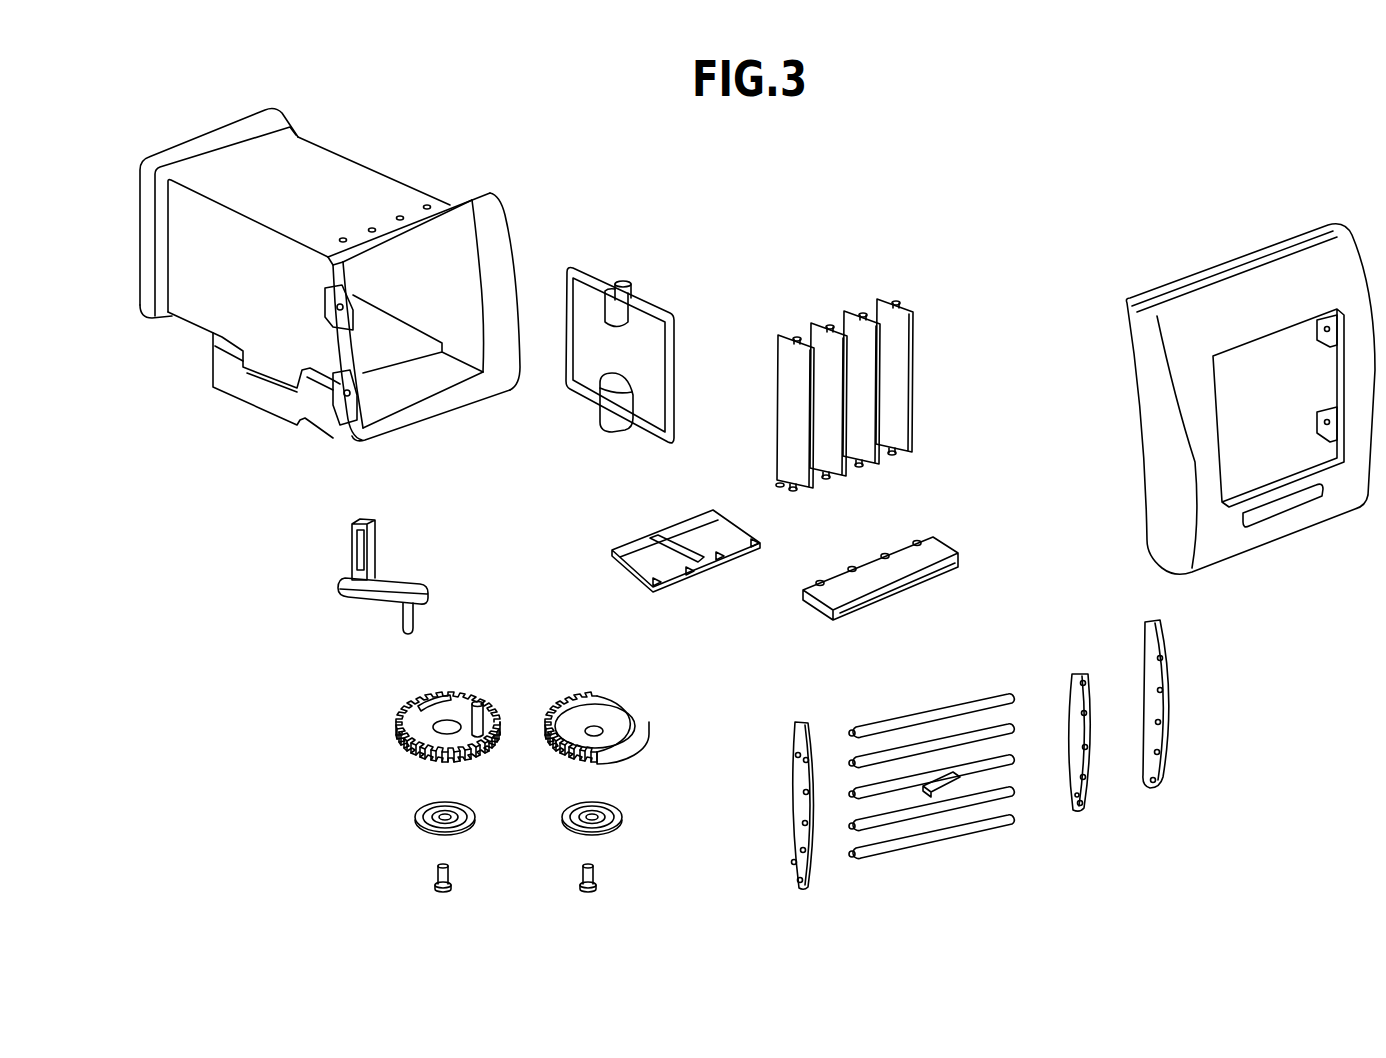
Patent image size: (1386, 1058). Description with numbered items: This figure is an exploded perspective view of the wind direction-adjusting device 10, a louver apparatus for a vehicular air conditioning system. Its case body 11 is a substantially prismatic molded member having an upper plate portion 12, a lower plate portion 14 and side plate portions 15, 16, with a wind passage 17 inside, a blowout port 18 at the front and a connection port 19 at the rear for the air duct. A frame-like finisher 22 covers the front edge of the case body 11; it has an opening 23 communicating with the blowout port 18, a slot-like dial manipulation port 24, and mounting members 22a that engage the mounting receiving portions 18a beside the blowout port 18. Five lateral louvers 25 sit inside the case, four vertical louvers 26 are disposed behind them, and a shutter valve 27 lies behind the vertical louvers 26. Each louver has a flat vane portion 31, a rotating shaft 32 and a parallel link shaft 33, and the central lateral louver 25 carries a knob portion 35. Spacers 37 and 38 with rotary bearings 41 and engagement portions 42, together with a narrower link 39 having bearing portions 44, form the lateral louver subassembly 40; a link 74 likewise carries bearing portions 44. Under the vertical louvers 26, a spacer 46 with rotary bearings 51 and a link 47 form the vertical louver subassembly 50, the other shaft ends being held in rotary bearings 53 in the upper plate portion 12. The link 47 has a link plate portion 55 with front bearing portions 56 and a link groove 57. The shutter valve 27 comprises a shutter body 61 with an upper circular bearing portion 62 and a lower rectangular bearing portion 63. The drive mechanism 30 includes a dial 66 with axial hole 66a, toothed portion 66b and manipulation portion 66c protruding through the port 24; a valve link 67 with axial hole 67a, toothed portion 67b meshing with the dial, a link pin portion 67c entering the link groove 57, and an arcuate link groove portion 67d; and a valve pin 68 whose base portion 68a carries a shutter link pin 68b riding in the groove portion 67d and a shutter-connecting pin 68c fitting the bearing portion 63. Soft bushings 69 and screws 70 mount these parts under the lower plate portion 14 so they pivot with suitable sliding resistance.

The wind direction-adjusting device 10 is at (977, 209).
The case body 11 is at (303, 138).
The upper plate portion 12 is at (343, 172).
The lower plate portion 14 is at (418, 343).
The side plate portion 15 is at (195, 313).
The side plate portion 16 is at (416, 252).
The wind passage 17 is at (460, 233).
The blowout port 18 is at (502, 318).
The mounting receiving portion 18a is at (347, 317).
The connection port 19 is at (145, 243).
The finisher 22 is at (1140, 330).
The mounting member 22a is at (1320, 332).
The opening 23 is at (1220, 440).
The dial manipulation port 24 is at (1290, 515).
The lateral louver 25 is at (983, 723).
The vertical louver 26 is at (867, 335).
The shutter valve 27 is at (653, 298).
The drive mechanism 30 is at (366, 799).
The vane portion 31 is at (830, 372).
The rotating shaft 32 is at (797, 337).
The link shaft 33 is at (778, 483).
The knob portion 35 is at (945, 790).
The spacer 37 is at (795, 725).
The spacer 38 is at (1145, 620).
The link 39 is at (1076, 674).
The lateral louver subassembly 40 is at (1159, 816).
The rotary bearing 41 is at (804, 760).
The engagement portion 42 is at (797, 753).
The bearing portion 44 is at (1090, 683).
The spacer 46 is at (958, 553).
The link 47 is at (632, 545).
The vertical louver subassembly 50 is at (970, 464).
The rotary bearing 51 is at (820, 580).
The rotary bearing 53 is at (400, 218).
The link plate portion 55 is at (700, 515).
The bearing portion 56 is at (660, 585).
The link groove 57 is at (660, 538).
The shutter body 61 is at (650, 345).
The bearing portion 62 is at (625, 280).
The bearing portion 63 is at (608, 432).
The dial 66 is at (621, 696).
The axial hole 66a is at (594, 728).
The toothed portion 66b is at (556, 703).
The manipulation portion 66c is at (645, 743).
The valve link 67 is at (405, 700).
The axial hole 67a is at (435, 725).
The toothed portion 67b is at (415, 755).
The link pin portion 67c is at (480, 703).
The link groove portion 67d is at (444, 695).
The valve pin 68 is at (393, 578).
The base portion 68a is at (418, 588).
The shutter link pin 68b is at (413, 615).
The shutter-connecting pin 68c is at (352, 520).
The bushing 69 is at (475, 820).
The screw 70 is at (452, 878).
The link 74 is at (1080, 795).